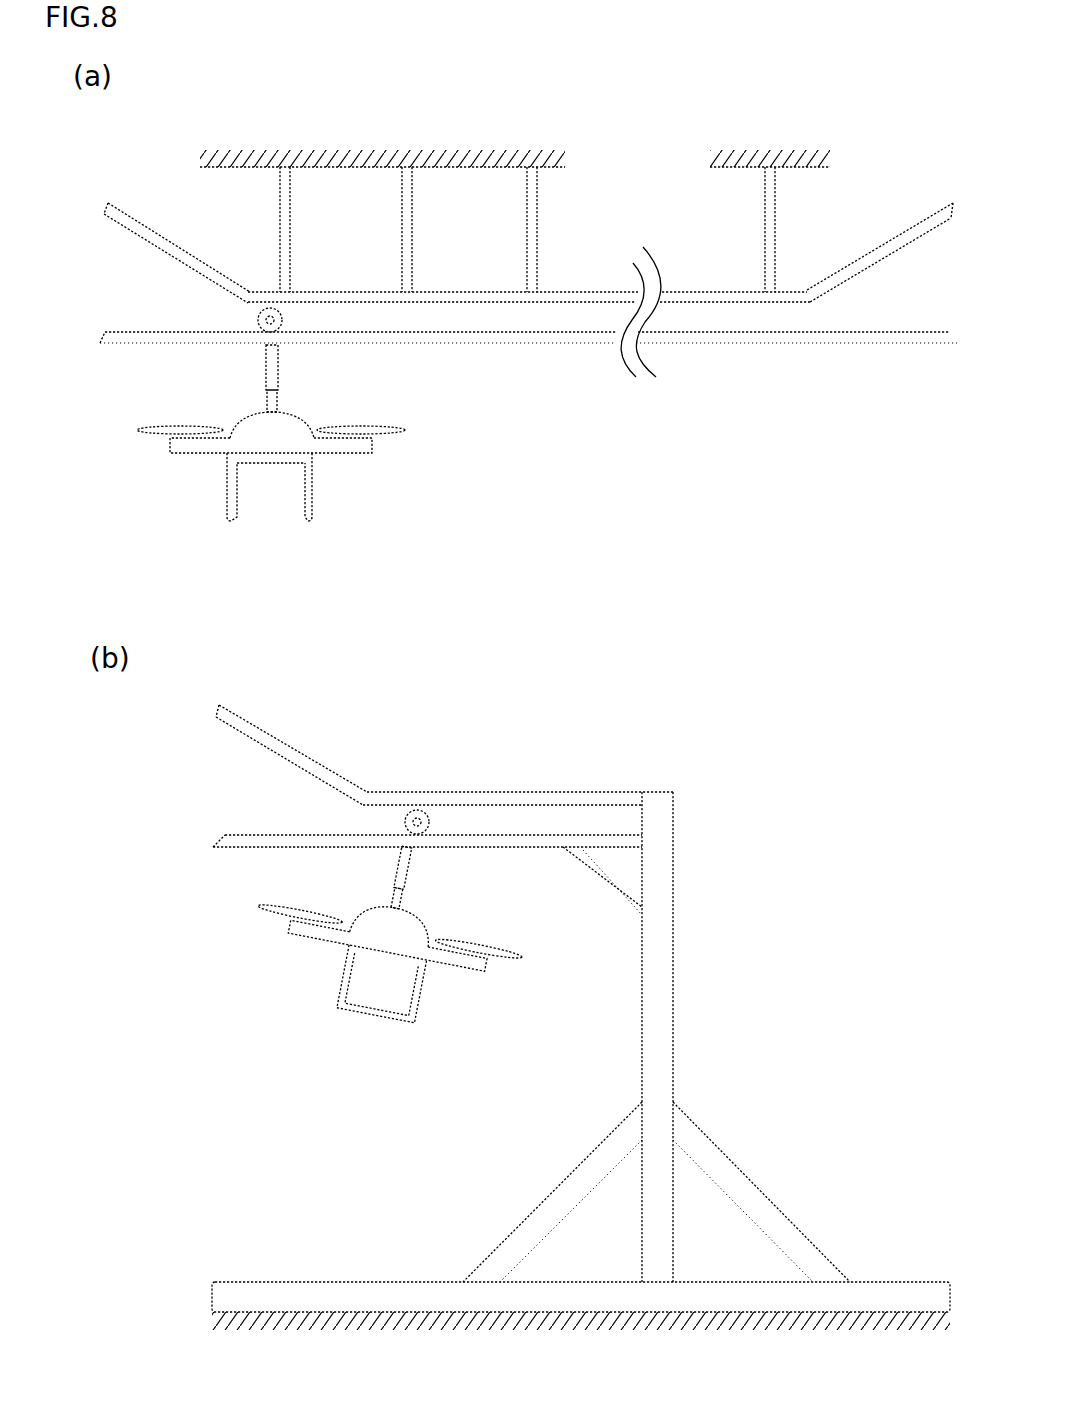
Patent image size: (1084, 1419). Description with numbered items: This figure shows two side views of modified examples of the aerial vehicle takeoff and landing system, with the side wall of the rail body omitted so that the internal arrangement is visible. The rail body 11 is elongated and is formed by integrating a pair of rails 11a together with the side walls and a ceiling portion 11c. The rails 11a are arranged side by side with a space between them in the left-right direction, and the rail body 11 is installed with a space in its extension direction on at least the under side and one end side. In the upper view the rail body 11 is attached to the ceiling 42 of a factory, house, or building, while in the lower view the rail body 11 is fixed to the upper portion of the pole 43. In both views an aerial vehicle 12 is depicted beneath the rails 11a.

The rail body 11 is at (445, 302).
The rails 11a is at (702, 344).
The ceiling portion 11c is at (788, 300).
The unmanned aerial vehicle (drone) 12 is at (226, 463).
The ceiling 42 is at (488, 157).
The pole 43 is at (663, 987).